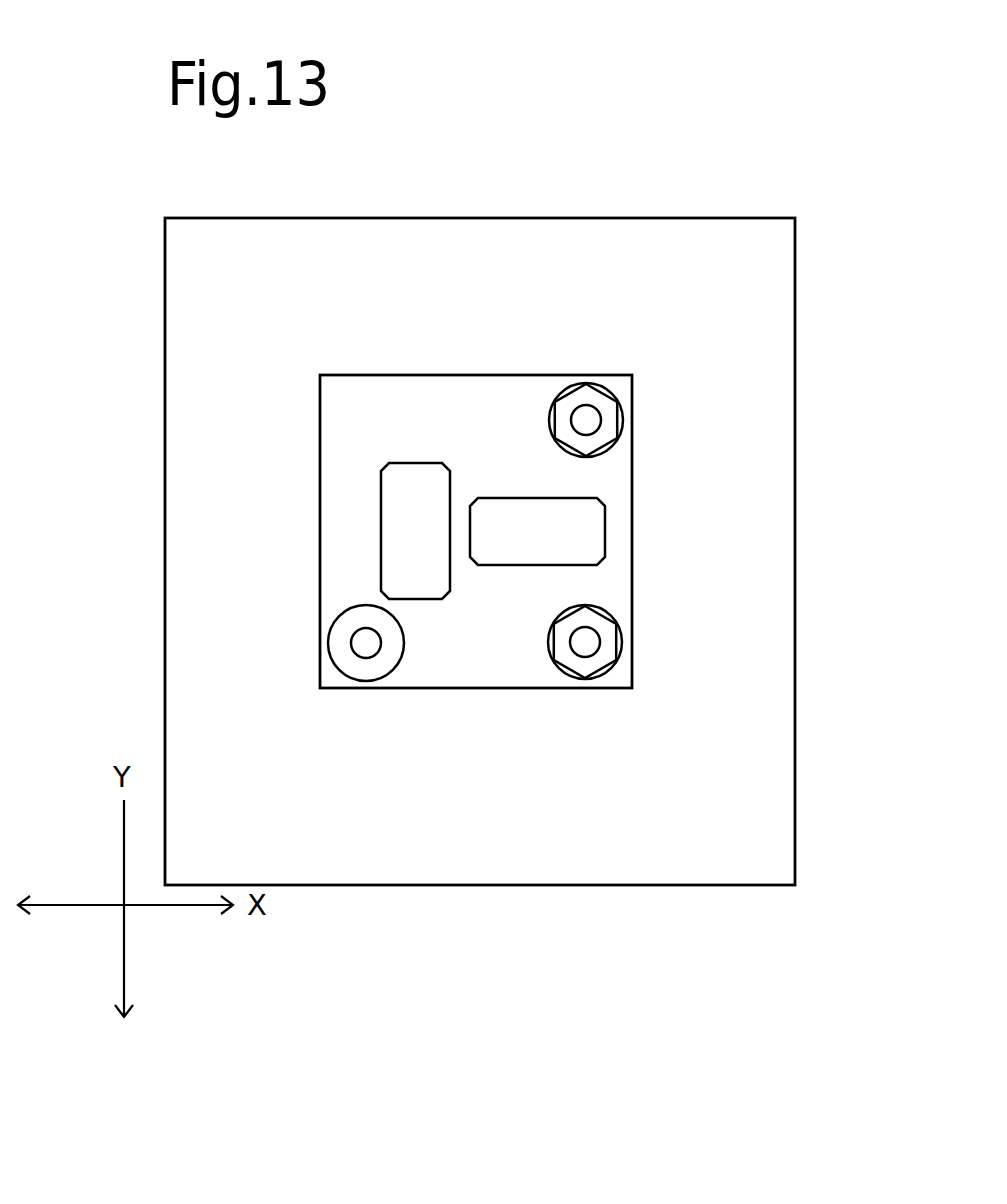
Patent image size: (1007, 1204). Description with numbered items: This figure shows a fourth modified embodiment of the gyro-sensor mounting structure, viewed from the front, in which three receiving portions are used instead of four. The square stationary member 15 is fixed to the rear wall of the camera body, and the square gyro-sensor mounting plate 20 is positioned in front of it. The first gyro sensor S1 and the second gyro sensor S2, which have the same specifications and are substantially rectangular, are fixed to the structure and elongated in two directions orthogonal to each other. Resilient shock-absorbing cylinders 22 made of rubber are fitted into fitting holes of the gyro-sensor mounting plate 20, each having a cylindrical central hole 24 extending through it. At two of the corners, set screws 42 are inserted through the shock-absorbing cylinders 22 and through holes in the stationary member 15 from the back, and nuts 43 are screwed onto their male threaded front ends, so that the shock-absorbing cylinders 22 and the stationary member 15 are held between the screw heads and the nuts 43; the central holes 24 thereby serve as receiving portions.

The stationary member 15 is at (765, 322).
The gyro-sensor mounting plate 20 is at (619, 487).
The shock-absorbing cylinder 22 is at (622, 413).
The central hole 24 is at (376, 645).
The set screw 42 is at (591, 420).
The nut 43 is at (568, 403).
The first gyro sensor S1 is at (595, 518).
The second gyro sensor S2 is at (392, 491).